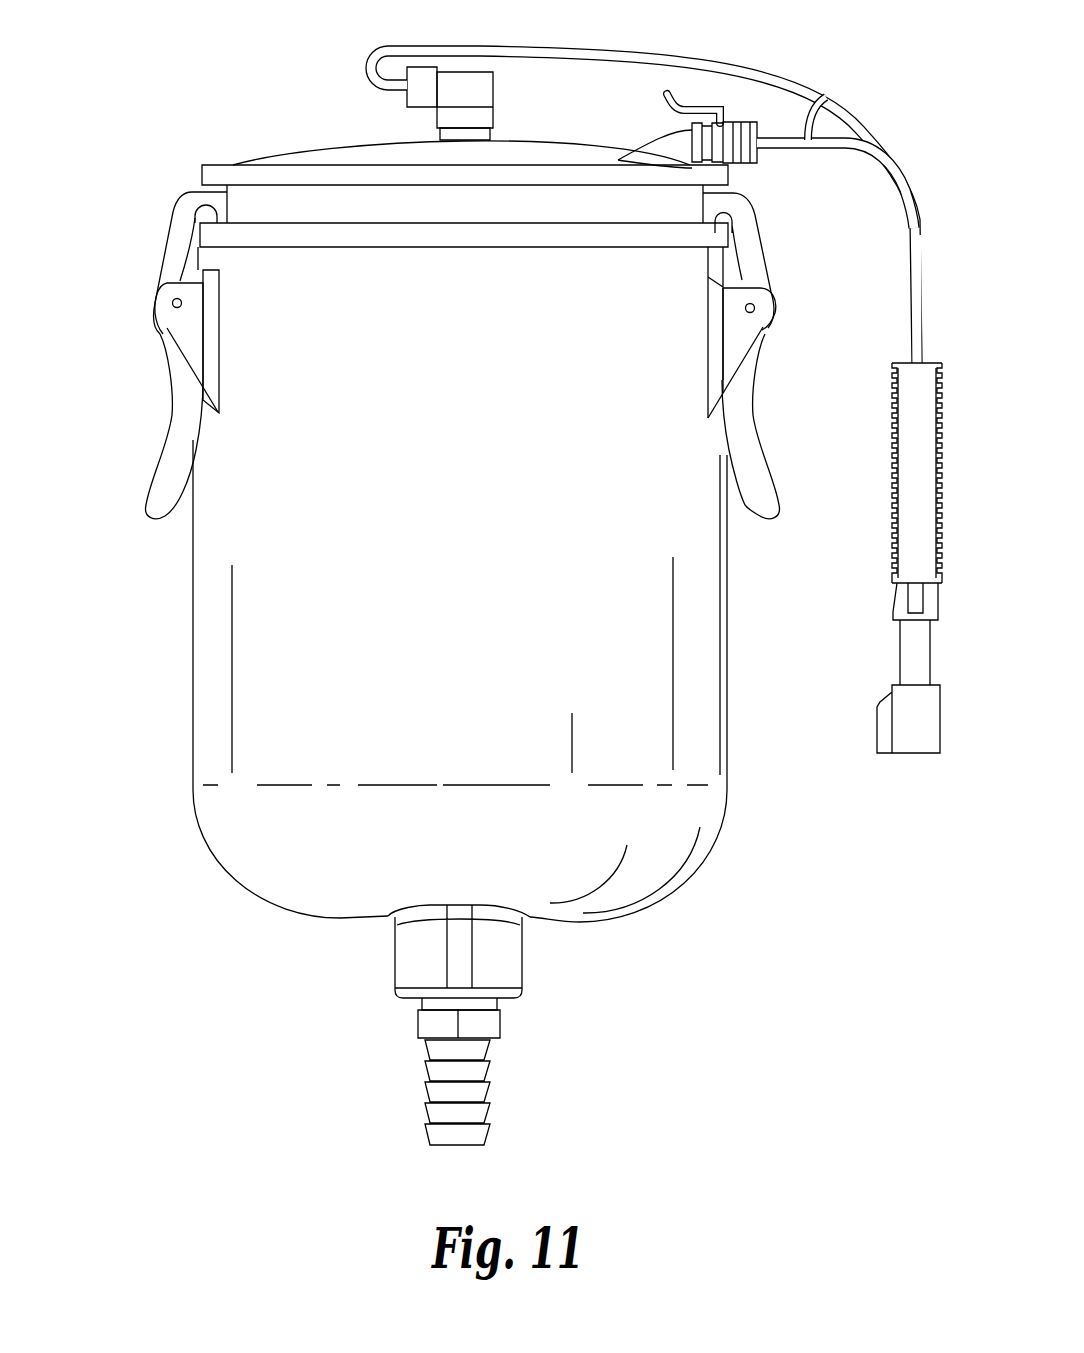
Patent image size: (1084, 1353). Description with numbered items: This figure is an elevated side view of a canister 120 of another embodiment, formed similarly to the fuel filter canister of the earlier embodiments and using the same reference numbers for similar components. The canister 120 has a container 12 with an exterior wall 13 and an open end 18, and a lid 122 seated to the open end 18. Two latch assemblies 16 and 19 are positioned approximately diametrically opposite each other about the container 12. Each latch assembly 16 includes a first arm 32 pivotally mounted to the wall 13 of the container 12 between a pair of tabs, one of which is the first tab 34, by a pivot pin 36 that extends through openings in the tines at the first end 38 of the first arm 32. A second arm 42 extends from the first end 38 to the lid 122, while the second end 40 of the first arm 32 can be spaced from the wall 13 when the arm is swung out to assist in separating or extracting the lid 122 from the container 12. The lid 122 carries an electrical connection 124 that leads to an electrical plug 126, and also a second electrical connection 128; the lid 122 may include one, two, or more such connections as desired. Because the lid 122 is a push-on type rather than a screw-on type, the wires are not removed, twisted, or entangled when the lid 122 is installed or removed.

The container 12 is at (595, 688).
The wall 13 is at (707, 577).
The latch assembly 16 is at (756, 370).
The open end 18 is at (283, 247).
The latch assembly 19 is at (146, 347).
The first arm 32 is at (762, 503).
The first tab 34 is at (733, 336).
The pivot pin 36 is at (753, 308).
The first end 38 is at (757, 356).
The second end 40 is at (762, 492).
The second arm 42 is at (747, 238).
The canister 120 is at (830, 318).
The lid 122 is at (539, 158).
The electrical connection 124 is at (440, 140).
The electrical plug 126 is at (455, 118).
The second electrical connection 128 is at (697, 142).